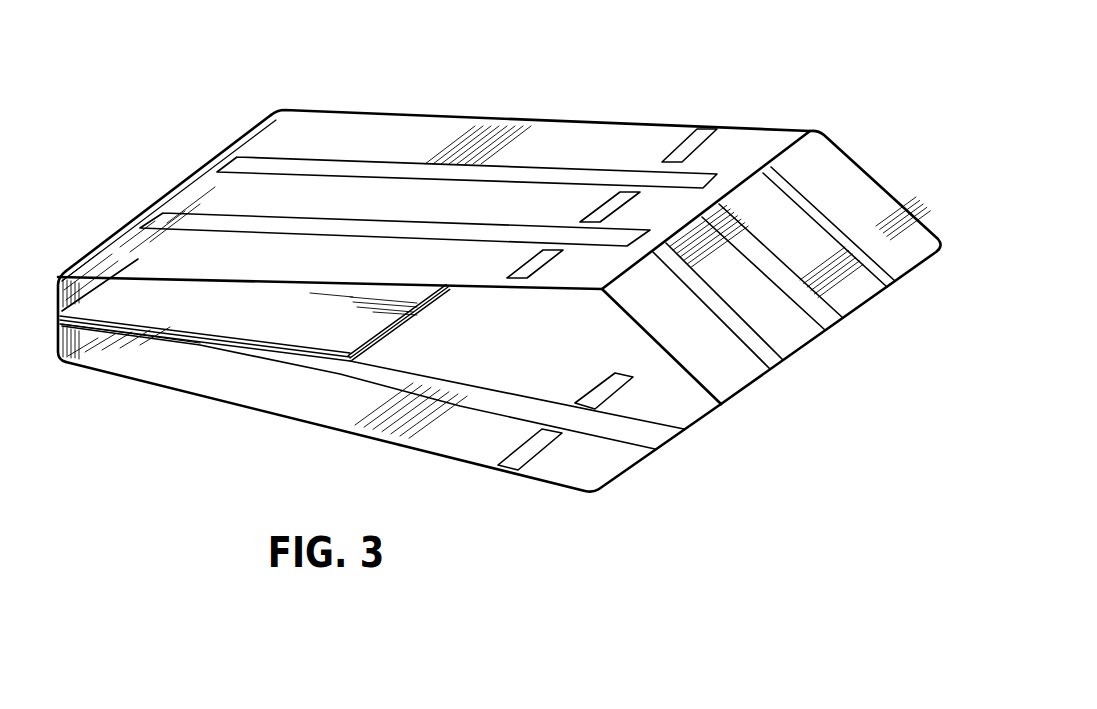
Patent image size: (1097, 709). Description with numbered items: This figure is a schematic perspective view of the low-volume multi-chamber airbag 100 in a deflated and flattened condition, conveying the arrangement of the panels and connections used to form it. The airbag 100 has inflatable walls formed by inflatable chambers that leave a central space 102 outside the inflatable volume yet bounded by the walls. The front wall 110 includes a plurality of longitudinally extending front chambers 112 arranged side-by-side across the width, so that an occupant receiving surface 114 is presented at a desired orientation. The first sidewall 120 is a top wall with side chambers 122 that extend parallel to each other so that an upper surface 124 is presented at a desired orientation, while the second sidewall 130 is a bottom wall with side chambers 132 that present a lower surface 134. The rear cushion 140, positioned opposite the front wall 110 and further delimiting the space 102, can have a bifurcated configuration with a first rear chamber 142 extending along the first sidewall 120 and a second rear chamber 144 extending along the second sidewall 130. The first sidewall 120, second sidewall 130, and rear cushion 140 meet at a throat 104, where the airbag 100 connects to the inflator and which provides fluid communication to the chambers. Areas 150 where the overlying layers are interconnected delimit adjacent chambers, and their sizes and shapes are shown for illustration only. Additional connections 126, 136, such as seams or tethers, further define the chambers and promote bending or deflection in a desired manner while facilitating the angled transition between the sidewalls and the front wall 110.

The airbag 100 is at (700, 76).
The central space 102 is at (513, 380).
The throat 104 is at (121, 229).
The front wall 110 is at (882, 192).
The front chambers 112 is at (907, 265).
The occupant receiving surface 114 is at (798, 260).
The first sidewall 120 is at (517, 197).
The side chambers 122 is at (445, 267).
The upper surface 124 is at (430, 205).
The connections 126 is at (552, 253).
The second sidewall 130 is at (282, 399).
The side chambers 132 is at (474, 324).
The lower surface 134 is at (520, 480).
The connections 136 is at (652, 351).
The rear cushion 140 is at (181, 339).
The first rear chamber 142 is at (230, 335).
The second rear chamber 144 is at (205, 340).
The areas 150 is at (270, 230).